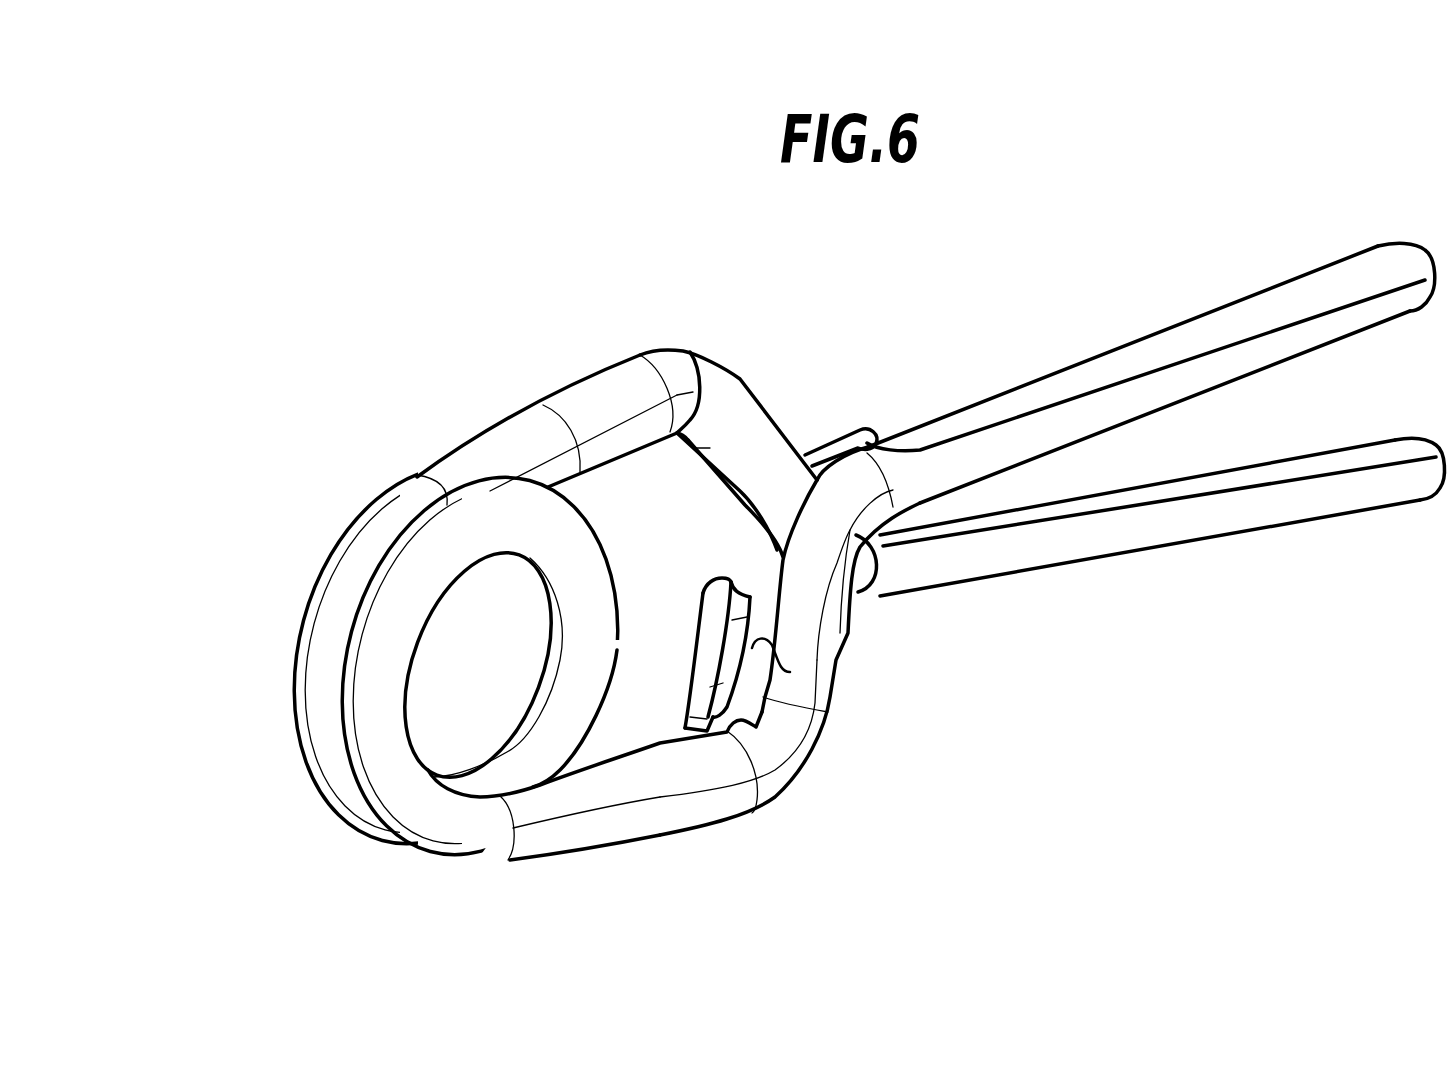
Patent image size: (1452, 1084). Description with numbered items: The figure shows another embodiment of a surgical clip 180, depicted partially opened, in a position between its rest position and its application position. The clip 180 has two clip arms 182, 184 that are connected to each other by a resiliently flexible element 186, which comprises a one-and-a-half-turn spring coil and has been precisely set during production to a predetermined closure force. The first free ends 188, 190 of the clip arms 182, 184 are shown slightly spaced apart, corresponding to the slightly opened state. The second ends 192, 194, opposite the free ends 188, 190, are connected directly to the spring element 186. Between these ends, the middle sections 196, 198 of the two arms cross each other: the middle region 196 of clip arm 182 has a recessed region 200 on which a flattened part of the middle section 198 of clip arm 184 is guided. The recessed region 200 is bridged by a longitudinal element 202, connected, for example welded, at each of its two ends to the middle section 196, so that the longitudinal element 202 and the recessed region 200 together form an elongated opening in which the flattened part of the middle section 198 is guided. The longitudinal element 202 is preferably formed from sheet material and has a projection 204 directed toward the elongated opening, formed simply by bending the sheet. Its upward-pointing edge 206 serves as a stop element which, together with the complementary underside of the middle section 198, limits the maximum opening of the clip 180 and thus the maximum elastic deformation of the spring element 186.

The surgical clip 180 is at (1040, 618).
The clip arm 182 is at (1208, 280).
The clip arm 184 is at (1256, 560).
The resiliently flexible element 186 is at (262, 737).
The first free end 188 is at (1343, 256).
The first free end 190 is at (1387, 506).
The second end 192 is at (697, 832).
The second end 194 is at (605, 372).
The middle section 196 is at (850, 737).
The middle section 198 is at (760, 394).
The recessed region 200 is at (790, 672).
The longitudinal element 202 is at (688, 581).
The projection 204 is at (720, 626).
The edge 206 is at (740, 594).